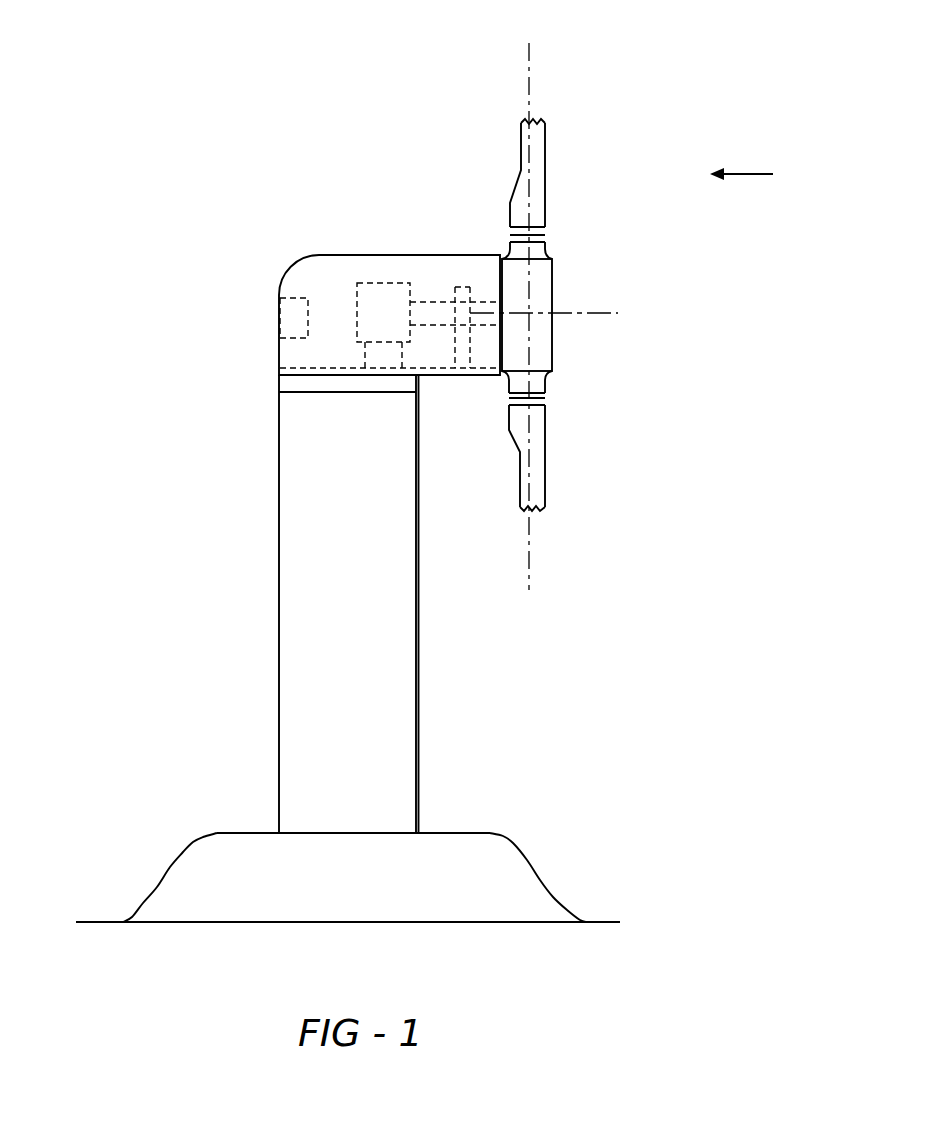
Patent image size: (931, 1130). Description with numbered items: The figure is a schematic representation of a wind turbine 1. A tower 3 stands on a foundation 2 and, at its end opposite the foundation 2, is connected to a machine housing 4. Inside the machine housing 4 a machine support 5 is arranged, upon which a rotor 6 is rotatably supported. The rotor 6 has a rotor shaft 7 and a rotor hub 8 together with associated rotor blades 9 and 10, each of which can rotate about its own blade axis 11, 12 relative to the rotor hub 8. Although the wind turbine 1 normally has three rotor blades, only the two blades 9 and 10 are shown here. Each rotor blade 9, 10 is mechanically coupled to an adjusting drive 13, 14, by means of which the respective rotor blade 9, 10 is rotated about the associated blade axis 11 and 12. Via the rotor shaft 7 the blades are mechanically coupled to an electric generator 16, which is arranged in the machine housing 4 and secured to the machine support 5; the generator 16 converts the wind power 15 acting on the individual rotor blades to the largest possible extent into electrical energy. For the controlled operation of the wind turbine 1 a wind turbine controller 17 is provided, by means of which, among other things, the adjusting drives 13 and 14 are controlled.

The wind turbine 1 is at (138, 182).
The foundation 2 is at (170, 867).
The tower 3 is at (297, 597).
The machine housing 4 is at (324, 255).
The machine support 5 is at (297, 367).
The rotor 6 is at (573, 266).
The rotor shaft 7 is at (445, 318).
The rotor hub 8 is at (552, 340).
The rotor blade 9 is at (545, 470).
The rotor blade 10 is at (521, 150).
The blade axis 11 is at (529, 567).
The blade axis 12 is at (527, 62).
The adjusting drive 13 is at (545, 397).
The adjusting drive 14 is at (510, 228).
The wind power 15 is at (760, 174).
The electric generator 16 is at (378, 283).
The wind turbine controller 17 is at (293, 297).